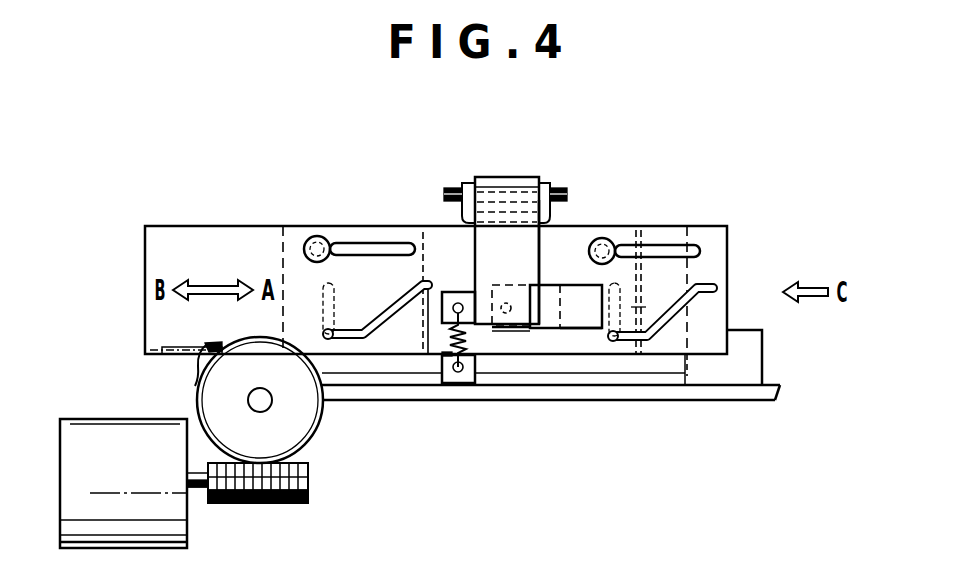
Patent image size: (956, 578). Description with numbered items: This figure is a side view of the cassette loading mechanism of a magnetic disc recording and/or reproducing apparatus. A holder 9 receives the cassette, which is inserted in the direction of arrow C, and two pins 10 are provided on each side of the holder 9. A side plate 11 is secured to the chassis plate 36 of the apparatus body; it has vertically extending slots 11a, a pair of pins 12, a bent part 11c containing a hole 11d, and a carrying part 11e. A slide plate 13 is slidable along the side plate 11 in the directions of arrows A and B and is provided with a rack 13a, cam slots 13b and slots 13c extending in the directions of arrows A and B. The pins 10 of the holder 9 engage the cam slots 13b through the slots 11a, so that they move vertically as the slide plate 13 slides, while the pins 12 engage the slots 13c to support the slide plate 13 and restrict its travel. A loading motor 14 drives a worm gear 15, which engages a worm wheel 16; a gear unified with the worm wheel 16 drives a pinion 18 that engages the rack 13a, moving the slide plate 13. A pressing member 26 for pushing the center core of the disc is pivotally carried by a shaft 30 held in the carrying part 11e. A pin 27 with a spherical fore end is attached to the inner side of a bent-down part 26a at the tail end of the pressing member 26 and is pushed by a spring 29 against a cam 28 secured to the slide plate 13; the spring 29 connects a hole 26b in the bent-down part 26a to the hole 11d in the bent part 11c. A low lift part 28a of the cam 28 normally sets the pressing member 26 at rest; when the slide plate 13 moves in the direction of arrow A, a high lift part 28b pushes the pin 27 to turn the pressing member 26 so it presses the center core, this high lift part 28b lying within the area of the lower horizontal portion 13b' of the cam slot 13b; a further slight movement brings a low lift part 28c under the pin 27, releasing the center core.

The holder 9 is at (760, 348).
The pins 10 is at (330, 340).
The side plate 11 is at (689, 365).
The slots 11a is at (335, 303).
The bent part 11c is at (445, 386).
The hole 11d is at (443, 384).
The carrying part 11e is at (468, 182).
The pins 12 is at (316, 236).
The slide plate 13 is at (172, 230).
The rack 13a is at (178, 355).
The cam slots 13b is at (538, 406).
The lower horizontal portion 13b' is at (501, 392).
The slots 13c is at (377, 243).
The loading motor 14 is at (80, 435).
The worm gear 15 is at (272, 502).
The worm wheel 16 is at (302, 436).
The pinion 18 is at (196, 373).
The pressing member 26 is at (508, 183).
The bent-down part 26a is at (533, 243).
The hole 26b is at (457, 303).
The pin 27 is at (506, 303).
The cam 28 is at (565, 287).
The low lift part 28a is at (579, 330).
The high lift part 28b is at (545, 330).
The low lift part 28c is at (500, 332).
The spring 29 is at (458, 372).
The shaft 30 is at (450, 187).
The chassis plate 36 is at (762, 397).